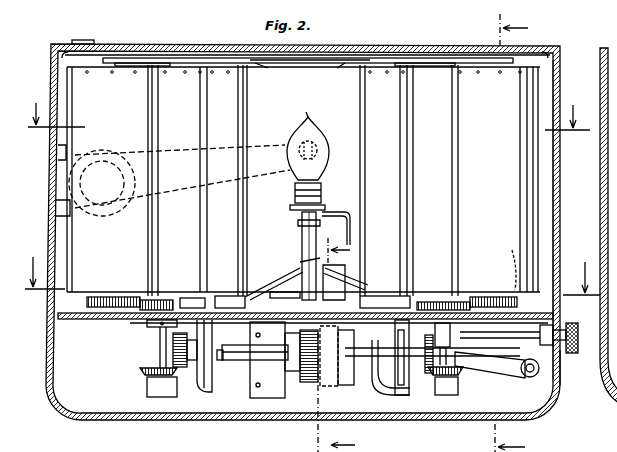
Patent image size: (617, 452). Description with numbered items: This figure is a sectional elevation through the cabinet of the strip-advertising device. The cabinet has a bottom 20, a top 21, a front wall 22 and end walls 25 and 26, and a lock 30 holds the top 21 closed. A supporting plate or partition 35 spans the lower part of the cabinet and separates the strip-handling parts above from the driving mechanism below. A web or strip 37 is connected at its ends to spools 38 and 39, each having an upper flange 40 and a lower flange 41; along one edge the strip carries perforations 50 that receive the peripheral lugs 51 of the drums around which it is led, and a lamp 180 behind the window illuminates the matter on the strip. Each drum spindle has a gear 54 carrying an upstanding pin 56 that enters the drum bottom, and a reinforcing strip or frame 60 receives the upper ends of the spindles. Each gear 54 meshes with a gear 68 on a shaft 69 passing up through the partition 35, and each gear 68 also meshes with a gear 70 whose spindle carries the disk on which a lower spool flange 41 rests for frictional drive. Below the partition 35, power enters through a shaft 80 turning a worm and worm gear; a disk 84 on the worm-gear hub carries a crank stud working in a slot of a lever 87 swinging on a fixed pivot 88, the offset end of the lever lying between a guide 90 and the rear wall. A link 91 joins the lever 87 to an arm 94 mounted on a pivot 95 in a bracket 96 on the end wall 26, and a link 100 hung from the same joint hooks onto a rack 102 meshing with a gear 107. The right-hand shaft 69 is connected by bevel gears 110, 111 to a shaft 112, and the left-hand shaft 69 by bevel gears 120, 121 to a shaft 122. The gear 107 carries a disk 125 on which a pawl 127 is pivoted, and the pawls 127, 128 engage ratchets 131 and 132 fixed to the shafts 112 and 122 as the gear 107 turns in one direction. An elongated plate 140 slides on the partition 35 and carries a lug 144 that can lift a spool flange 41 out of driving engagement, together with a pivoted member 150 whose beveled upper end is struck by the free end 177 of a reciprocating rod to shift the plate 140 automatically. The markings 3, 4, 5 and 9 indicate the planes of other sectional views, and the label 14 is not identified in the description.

The section line 3- 3 is at (519, 233).
The section line 4- 4 is at (309, 109).
The section line 5- 5 is at (312, 266).
The section line 9- 9 is at (336, 345).
The shaft 14 is at (333, 365).
The bottom 20 is at (110, 420).
The top 21 is at (192, 53).
The front wall 22 is at (561, 372).
The end wall 25 is at (562, 215).
The end wall 26 is at (58, 210).
The lock 30 is at (83, 40).
The supporting plate or partition 35 is at (78, 320).
The web or strip 37 is at (200, 62).
The spool 38 is at (367, 170).
The spool 39 is at (232, 113).
The flange or disk 40 is at (268, 68).
The flange or disk 41 is at (246, 292).
The perforations 50 is at (196, 73).
The peripheral lugs 51 is at (68, 60).
The gear 54 is at (87, 303).
The pin 56 is at (98, 285).
The reinforcing strip or frame 60 is at (350, 58).
The gear 68 is at (158, 290).
The shaft 69 is at (150, 343).
The gear 70 is at (213, 296).
The shaft 80 is at (556, 328).
The disk 84 is at (393, 393).
The lever 87 is at (500, 380).
The fixed pivot 88 is at (566, 355).
The guide 90 is at (250, 372).
The link 91 is at (298, 228).
The arm 94 is at (283, 145).
The pivot 95 is at (110, 150).
The bracket 96 is at (60, 152).
The link 100 is at (301, 240).
The rack 102 is at (300, 264).
The gear 107 is at (307, 371).
The bevel gear 110 is at (430, 380).
The bevel gear 111 is at (420, 366).
The shaft 112 is at (374, 357).
The bevel gear 120 is at (178, 393).
The bevel gear 121 is at (209, 386).
The shaft 122 is at (262, 360).
The disk 125 is at (305, 432).
The pawl 127 is at (290, 333).
The pawl 128 is at (338, 330).
The ratchet 131 is at (337, 369).
The ratchet 132 is at (278, 360).
The elongated plate 140 is at (231, 345).
The lug 144 is at (289, 290).
The member 150 is at (338, 265).
The free end 177 is at (325, 246).
The lamp 180 is at (318, 130).